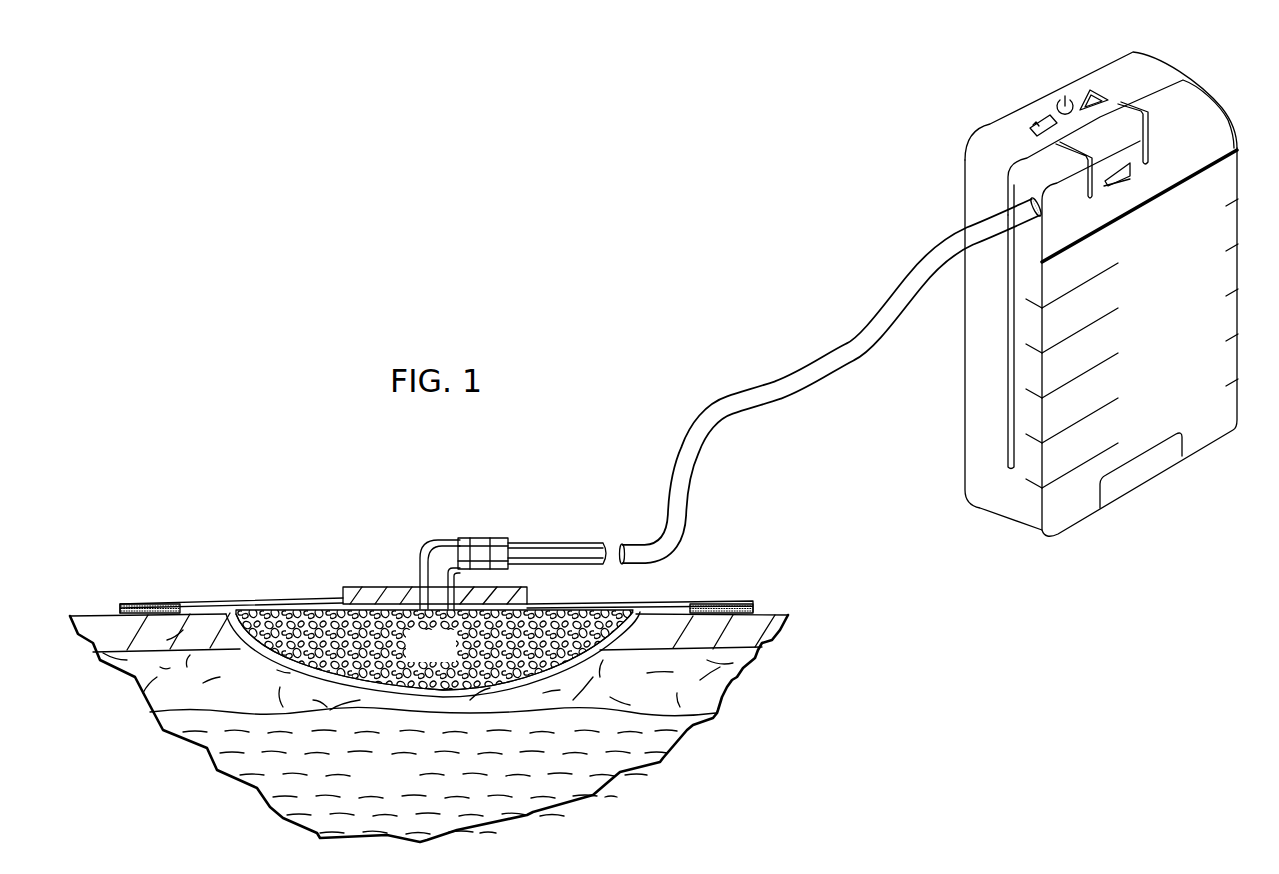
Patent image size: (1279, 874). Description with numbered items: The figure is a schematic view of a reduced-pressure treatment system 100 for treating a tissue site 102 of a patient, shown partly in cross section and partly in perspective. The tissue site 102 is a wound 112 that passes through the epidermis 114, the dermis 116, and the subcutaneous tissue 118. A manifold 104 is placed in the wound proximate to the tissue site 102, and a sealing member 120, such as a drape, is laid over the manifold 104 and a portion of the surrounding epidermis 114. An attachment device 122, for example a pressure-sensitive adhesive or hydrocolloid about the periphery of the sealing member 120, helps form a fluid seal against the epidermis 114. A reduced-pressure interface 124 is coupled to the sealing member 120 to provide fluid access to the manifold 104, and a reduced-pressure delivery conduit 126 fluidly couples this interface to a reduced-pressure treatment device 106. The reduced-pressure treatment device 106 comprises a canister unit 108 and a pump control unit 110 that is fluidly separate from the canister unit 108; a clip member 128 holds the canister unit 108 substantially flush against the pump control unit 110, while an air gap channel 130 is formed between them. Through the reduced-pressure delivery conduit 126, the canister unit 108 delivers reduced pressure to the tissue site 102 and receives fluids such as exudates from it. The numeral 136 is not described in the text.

The reduced-pressure treatment system 100 is at (312, 506).
The tissue site 102 is at (252, 667).
The manifold 104 is at (452, 657).
The reduced-pressure treatment device 106 is at (995, 126).
The canister unit 108 is at (1212, 97).
The pump control unit 110 is at (1153, 63).
The wound 112 is at (293, 660).
The epidermis 114 is at (778, 638).
The dermis 116 is at (733, 689).
The subcutaneous tissue 118 is at (412, 784).
The sealing member 120 is at (197, 598).
The attachment device 122 is at (120, 606).
The reduced-pressure interface 124 is at (437, 530).
The reduced-pressure delivery conduit 126 is at (792, 373).
The clip member 128 is at (1145, 468).
The air gap channel 130 is at (1010, 457).
The user interface 136 is at (1057, 88).